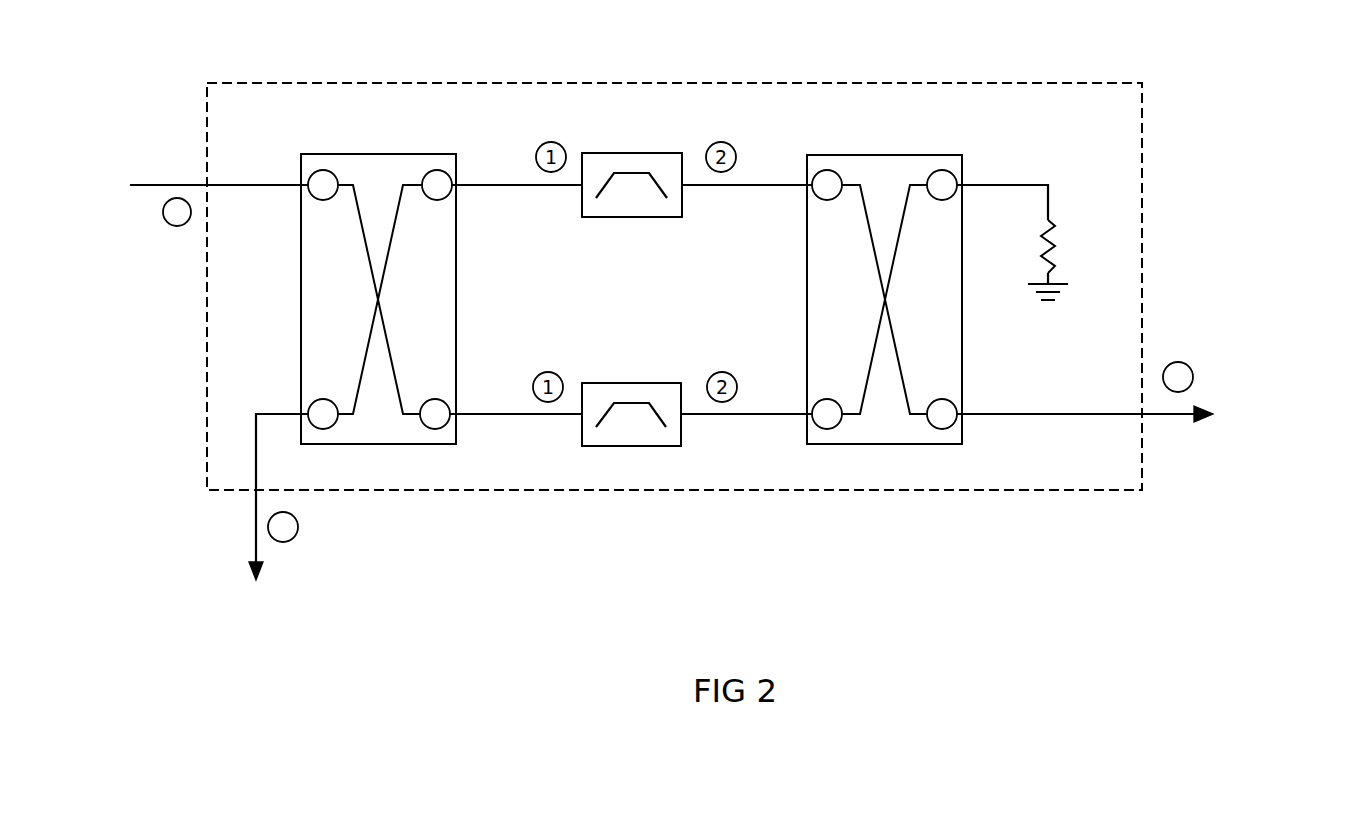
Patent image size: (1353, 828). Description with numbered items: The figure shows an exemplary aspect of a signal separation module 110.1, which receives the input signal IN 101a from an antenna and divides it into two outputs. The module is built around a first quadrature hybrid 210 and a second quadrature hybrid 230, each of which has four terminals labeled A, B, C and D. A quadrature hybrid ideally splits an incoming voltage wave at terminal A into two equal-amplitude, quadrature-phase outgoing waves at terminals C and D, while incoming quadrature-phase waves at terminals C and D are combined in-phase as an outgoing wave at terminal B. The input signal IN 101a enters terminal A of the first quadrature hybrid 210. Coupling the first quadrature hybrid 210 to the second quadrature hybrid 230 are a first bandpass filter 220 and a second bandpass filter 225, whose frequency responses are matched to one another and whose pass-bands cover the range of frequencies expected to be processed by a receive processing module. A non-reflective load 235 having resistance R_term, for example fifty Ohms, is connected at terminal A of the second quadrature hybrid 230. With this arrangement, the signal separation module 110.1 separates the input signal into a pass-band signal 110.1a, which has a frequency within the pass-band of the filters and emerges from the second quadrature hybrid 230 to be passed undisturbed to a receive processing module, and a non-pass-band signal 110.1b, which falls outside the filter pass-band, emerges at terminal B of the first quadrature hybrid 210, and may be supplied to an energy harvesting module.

The input signal IN 101a is at (162, 184).
The signal separation module 110.1 is at (1093, 83).
The pass-band signal 110.1a is at (1180, 418).
The non-pass-band signal 110.1b is at (254, 532).
The first quadrature hybrid 210 is at (403, 154).
The first bandpass filter 220 is at (637, 153).
The second bandpass filter 225 is at (632, 383).
The second quadrature hybrid 230 is at (912, 155).
The non-reflective load 235 is at (1058, 262).